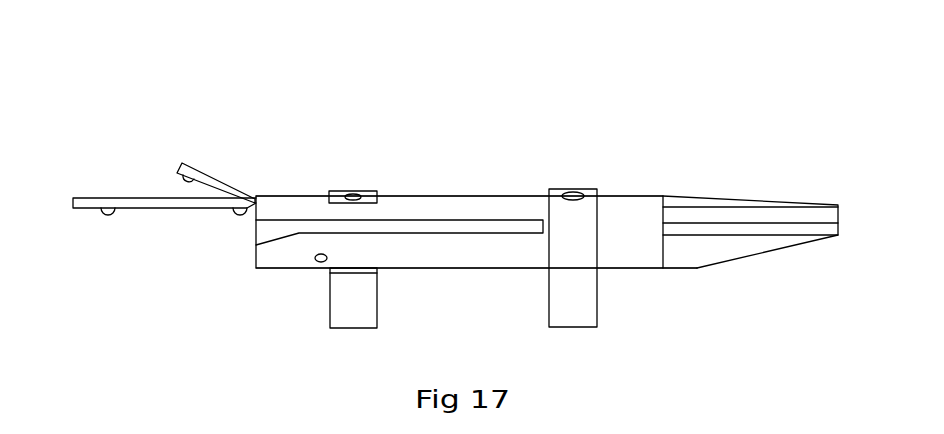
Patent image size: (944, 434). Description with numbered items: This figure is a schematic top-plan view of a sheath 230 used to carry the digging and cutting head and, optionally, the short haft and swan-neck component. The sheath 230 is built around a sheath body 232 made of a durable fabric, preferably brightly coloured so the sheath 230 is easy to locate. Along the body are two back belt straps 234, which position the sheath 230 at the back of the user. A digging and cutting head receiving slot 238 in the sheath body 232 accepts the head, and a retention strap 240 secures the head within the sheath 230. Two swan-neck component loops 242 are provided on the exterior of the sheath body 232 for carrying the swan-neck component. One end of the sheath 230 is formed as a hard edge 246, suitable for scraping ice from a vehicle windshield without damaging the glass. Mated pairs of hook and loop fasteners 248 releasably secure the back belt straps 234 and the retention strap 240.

The sheath 230 is at (268, 293).
The sheath body 232 is at (637, 193).
The back belt straps 234 is at (550, 193).
The digging and cutting head receiving slot 238 is at (270, 237).
The retention strap 240 is at (208, 175).
The swan-neck component loops 242 is at (548, 298).
The hard edge 246 is at (838, 205).
The hook and loop fasteners 248 is at (245, 212).